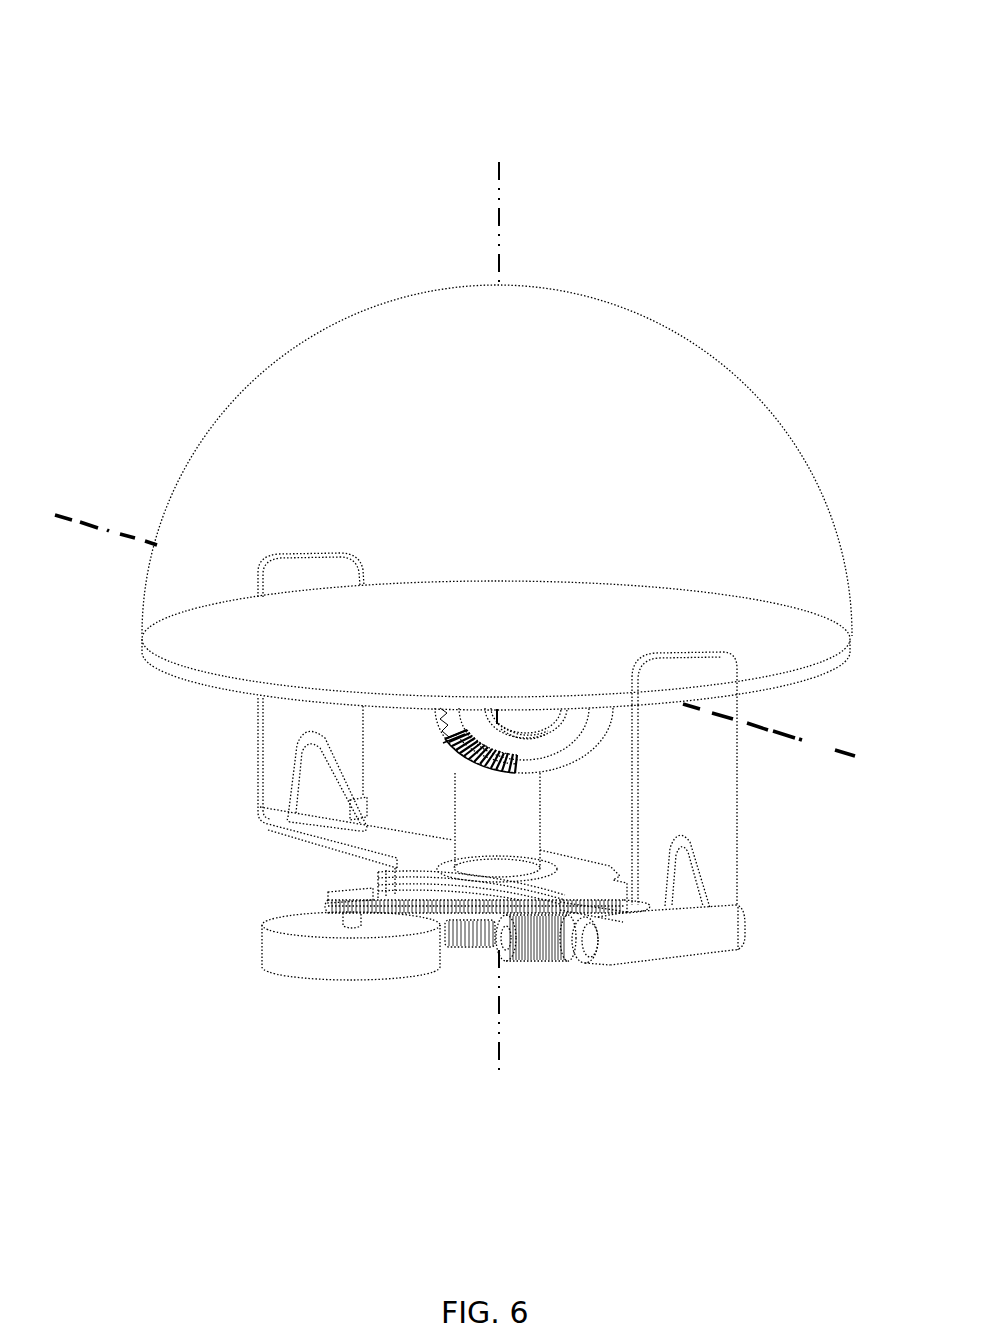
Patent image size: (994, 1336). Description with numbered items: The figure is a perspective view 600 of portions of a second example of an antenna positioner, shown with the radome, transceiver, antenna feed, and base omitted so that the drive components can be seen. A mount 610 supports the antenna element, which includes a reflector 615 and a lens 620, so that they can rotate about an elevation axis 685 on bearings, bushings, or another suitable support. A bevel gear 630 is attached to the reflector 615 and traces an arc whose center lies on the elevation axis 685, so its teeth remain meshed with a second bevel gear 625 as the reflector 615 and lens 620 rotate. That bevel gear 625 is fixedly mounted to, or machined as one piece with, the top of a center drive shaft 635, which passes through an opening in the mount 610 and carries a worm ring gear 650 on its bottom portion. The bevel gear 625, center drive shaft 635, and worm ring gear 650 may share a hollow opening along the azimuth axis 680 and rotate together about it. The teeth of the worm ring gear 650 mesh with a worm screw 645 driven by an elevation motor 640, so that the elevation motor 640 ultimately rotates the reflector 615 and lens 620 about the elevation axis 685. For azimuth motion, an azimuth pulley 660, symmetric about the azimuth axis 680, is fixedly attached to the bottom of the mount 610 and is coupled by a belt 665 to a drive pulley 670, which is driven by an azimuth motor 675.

The perspective view 600 is at (806, 40).
The mount 610 is at (270, 745).
The reflector 615 is at (798, 672).
The lens 620 is at (808, 490).
The bevel gear 625 is at (448, 752).
The bevel gear 630 is at (553, 750).
The center drive shaft 635 is at (462, 797).
The elevation motor 640 is at (716, 940).
The worm screw 645 is at (540, 960).
The worm ring gear 650 is at (476, 944).
The azimuth pulley 660 is at (473, 913).
The belt 665 is at (372, 886).
The drive pulley 670 is at (337, 893).
The azimuth motor 675 is at (310, 970).
The azimuth axis 680 is at (499, 226).
The elevation axis 685 is at (813, 740).